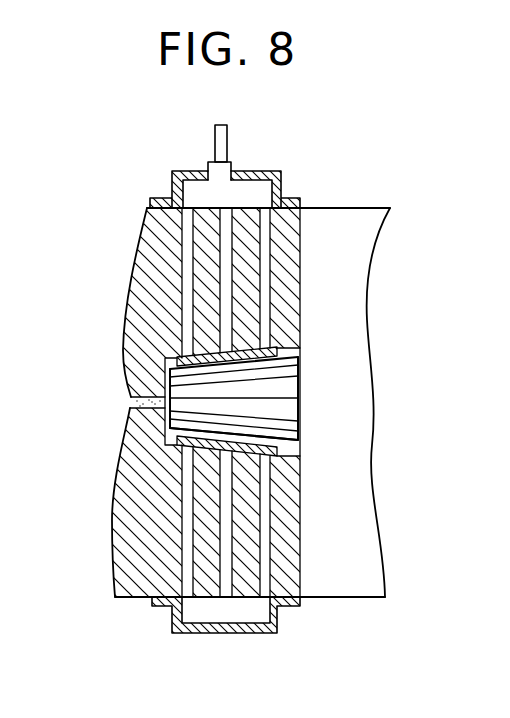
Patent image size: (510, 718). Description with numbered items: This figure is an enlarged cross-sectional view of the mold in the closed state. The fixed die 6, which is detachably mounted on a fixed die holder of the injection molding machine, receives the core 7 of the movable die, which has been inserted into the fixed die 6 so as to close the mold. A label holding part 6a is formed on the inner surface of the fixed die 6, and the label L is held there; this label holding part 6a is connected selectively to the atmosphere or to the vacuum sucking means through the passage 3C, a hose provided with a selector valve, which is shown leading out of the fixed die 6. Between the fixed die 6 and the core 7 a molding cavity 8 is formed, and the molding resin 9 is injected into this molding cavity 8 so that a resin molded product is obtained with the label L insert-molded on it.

The passage 3C is at (228, 140).
The fixed die 6 is at (125, 593).
The label holding part 6a is at (255, 342).
The label L is at (285, 350).
The core 7 is at (292, 412).
The molding cavity 8 is at (292, 452).
The molding resin 9 is at (132, 402).